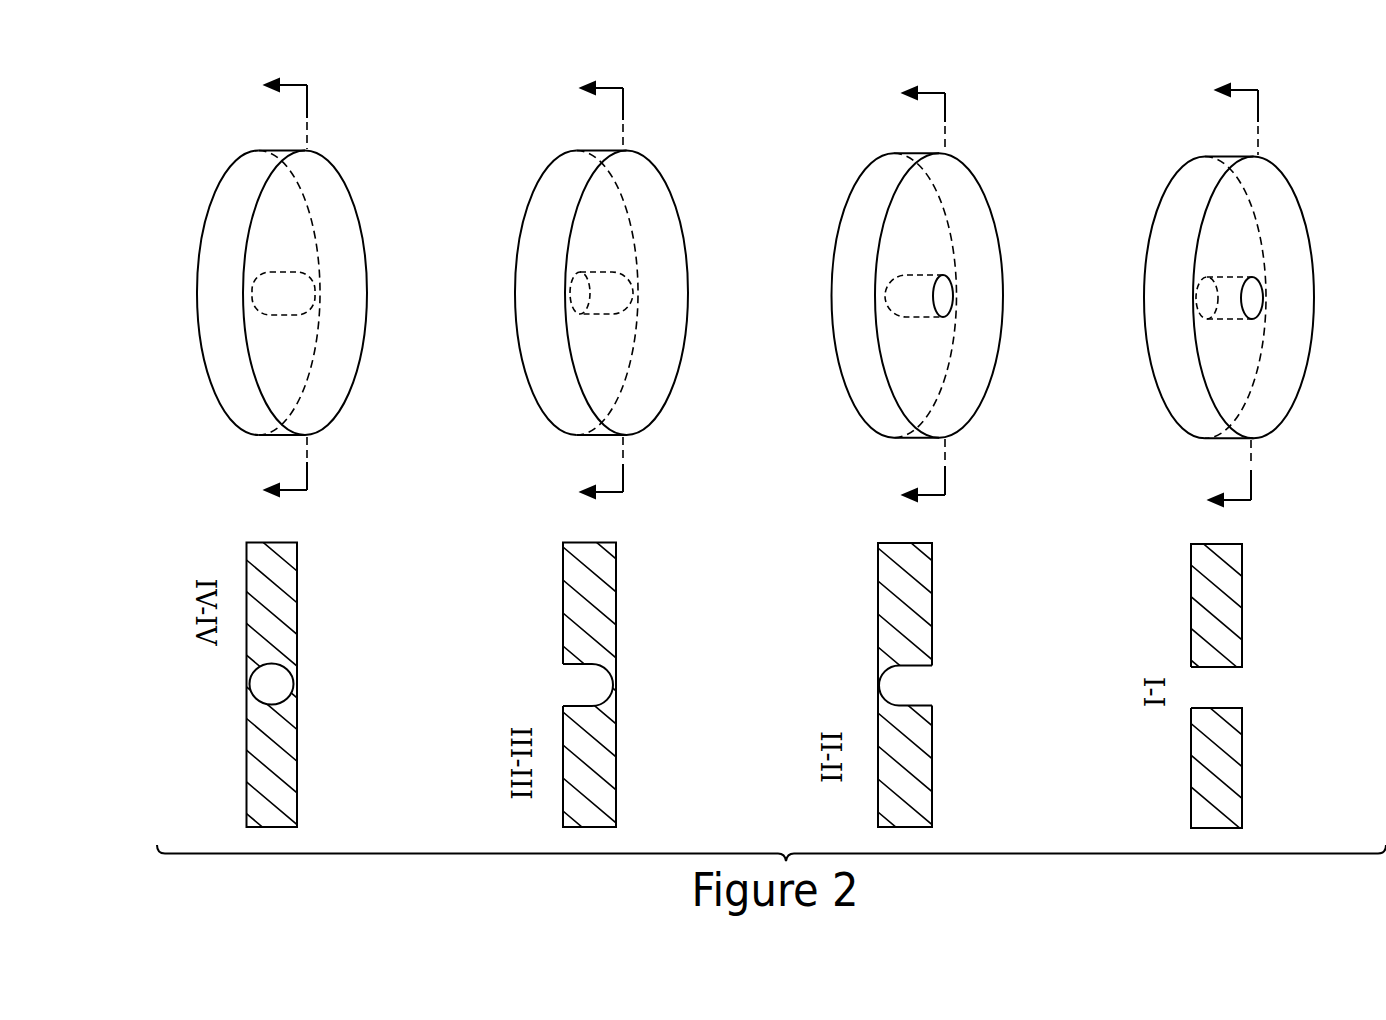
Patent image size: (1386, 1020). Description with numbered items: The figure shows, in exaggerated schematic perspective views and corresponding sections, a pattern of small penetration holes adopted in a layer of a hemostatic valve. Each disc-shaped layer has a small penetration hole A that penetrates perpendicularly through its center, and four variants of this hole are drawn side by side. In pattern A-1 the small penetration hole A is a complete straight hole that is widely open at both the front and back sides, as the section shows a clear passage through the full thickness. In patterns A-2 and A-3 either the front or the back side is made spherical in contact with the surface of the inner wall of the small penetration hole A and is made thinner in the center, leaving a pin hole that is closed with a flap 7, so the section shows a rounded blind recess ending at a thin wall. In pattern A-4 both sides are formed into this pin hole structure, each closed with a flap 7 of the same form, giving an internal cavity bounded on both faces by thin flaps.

The flap 7 is at (297, 698).
The small penetration hole A is at (290, 305).
The pattern A-1 is at (1201, 312).
The pattern A-2 is at (896, 307).
The pattern A-3 is at (580, 293).
The pattern A-4 is at (261, 291).